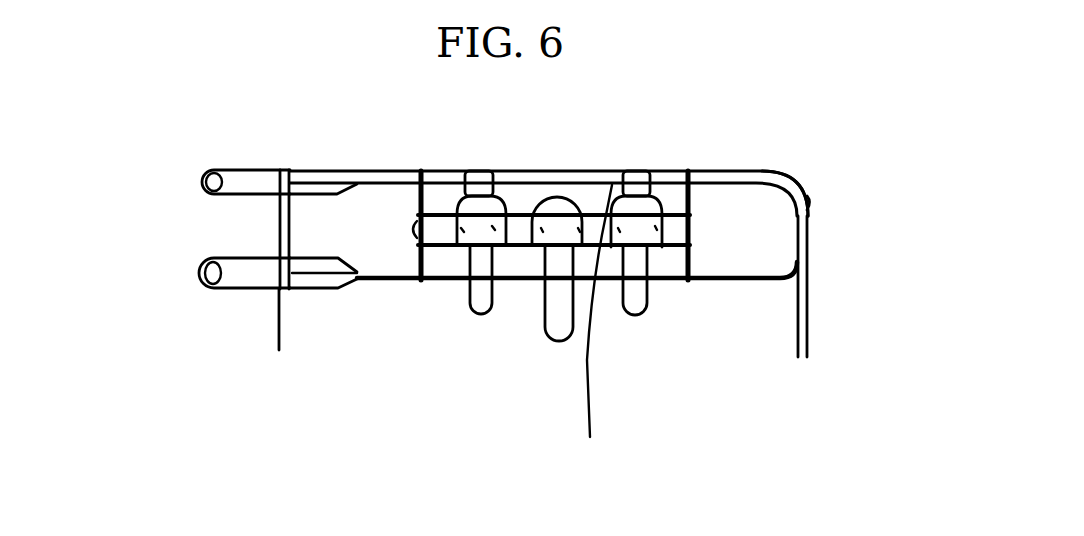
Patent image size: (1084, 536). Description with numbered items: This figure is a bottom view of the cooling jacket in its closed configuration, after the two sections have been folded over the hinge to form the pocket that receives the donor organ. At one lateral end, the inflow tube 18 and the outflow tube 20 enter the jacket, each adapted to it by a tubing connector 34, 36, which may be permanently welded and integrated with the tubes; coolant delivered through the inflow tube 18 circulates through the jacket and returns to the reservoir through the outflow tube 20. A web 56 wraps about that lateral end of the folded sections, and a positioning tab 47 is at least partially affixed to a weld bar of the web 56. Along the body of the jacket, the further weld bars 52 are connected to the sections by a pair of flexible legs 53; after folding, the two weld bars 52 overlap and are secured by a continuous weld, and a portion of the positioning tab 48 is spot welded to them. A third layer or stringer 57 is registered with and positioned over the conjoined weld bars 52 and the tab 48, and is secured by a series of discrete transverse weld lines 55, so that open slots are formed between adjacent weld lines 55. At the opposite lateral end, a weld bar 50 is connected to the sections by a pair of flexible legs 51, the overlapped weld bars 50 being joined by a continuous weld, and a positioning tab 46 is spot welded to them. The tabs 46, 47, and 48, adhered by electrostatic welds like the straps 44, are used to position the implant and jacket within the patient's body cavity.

The inflow tube 18 is at (243, 293).
The outflow tube 20 is at (228, 168).
The connector 34 is at (319, 288).
The connector 36 is at (317, 169).
The straps 44 is at (467, 292).
The positioning tab 46 is at (807, 320).
The positioning tab 47 is at (279, 336).
The positioning tab 48 is at (543, 328).
The weld bar 50 is at (808, 205).
The flexible legs 51 is at (797, 192).
The weld bar 52 is at (600, 172).
The flexible legs 53 is at (420, 188).
The transverse weld lines 55 is at (522, 205).
The web 56 is at (277, 208).
The stringer 57 is at (610, 330).